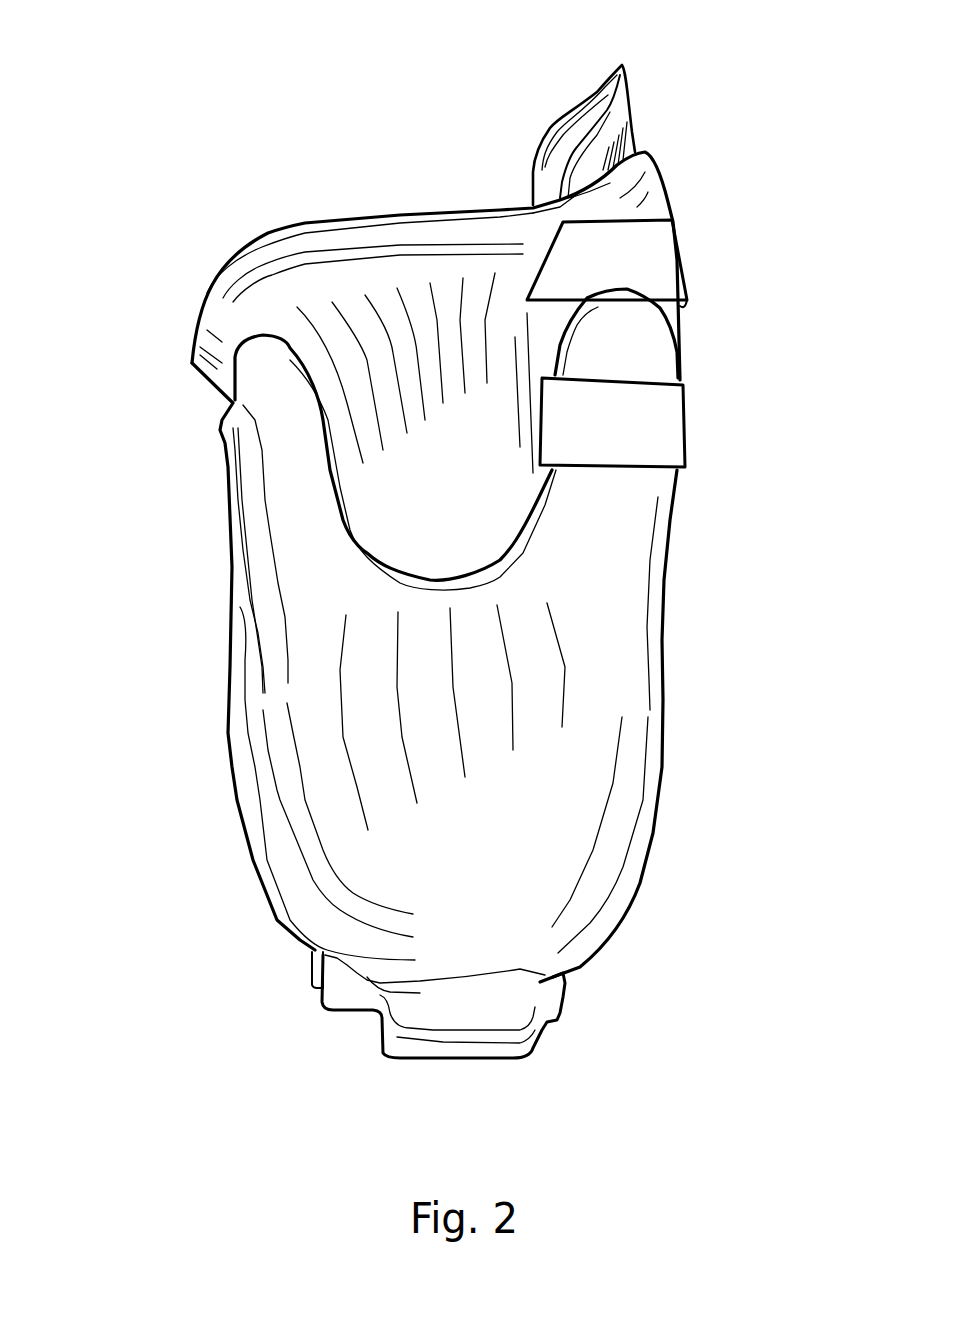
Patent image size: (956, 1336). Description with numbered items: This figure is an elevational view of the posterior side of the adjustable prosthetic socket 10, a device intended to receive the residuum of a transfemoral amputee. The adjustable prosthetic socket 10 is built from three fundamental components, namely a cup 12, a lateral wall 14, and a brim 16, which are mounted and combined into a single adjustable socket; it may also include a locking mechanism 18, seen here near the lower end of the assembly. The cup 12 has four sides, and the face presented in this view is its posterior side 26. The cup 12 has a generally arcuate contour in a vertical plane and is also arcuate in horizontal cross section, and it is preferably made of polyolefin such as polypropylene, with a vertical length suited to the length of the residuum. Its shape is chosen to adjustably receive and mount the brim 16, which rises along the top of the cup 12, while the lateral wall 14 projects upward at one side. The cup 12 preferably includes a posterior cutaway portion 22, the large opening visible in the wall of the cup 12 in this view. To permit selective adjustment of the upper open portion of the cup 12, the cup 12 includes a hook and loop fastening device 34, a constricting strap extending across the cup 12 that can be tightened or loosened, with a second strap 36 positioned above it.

The adjustable prosthetic socket 10 is at (354, 112).
The cup 12 is at (230, 483).
The lateral wall 14 is at (632, 105).
The brim 16 is at (207, 287).
The locking mechanism 18 is at (312, 968).
The posterior cutaway portion 22 is at (353, 553).
The posterior side 26 is at (487, 872).
The hook and loop fastening device 34 is at (687, 430).
The upper strap 36 is at (688, 265).